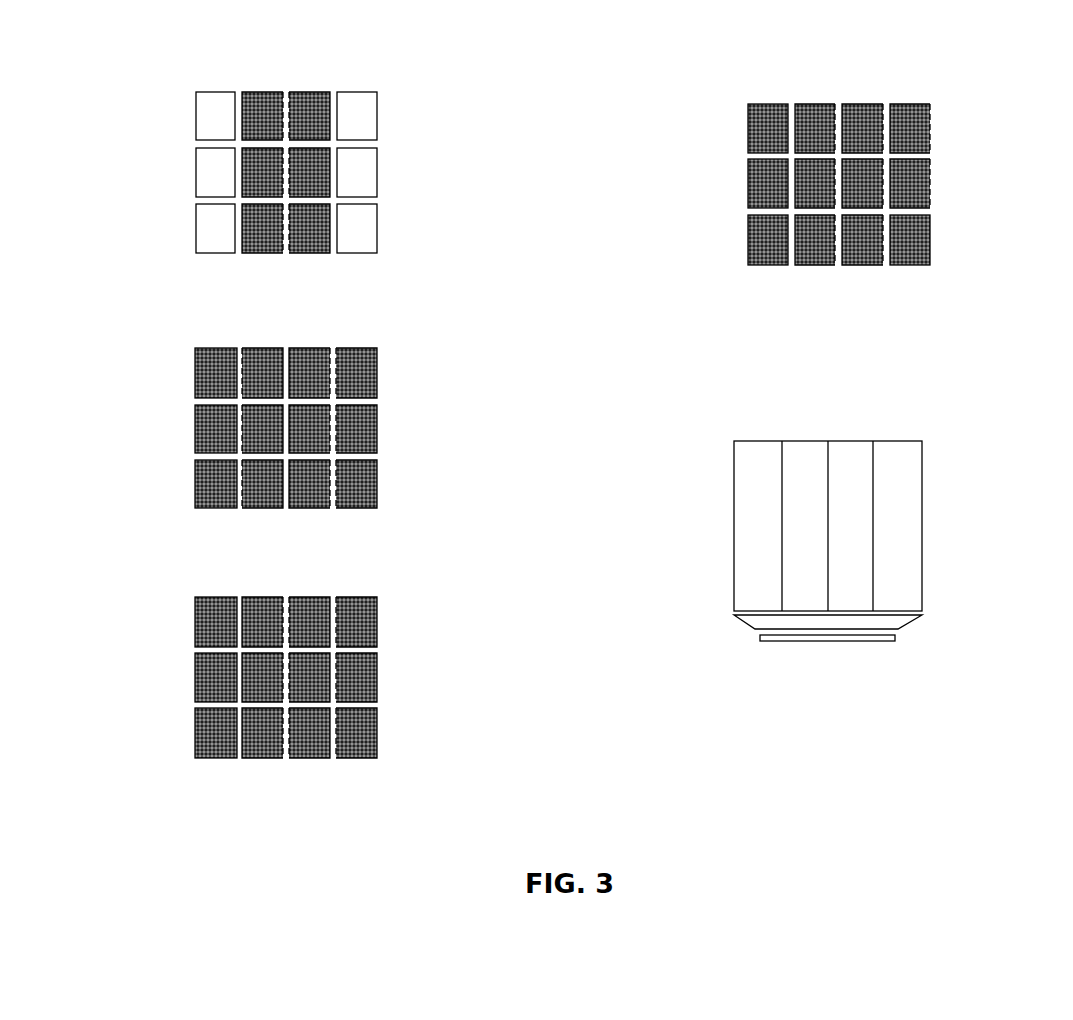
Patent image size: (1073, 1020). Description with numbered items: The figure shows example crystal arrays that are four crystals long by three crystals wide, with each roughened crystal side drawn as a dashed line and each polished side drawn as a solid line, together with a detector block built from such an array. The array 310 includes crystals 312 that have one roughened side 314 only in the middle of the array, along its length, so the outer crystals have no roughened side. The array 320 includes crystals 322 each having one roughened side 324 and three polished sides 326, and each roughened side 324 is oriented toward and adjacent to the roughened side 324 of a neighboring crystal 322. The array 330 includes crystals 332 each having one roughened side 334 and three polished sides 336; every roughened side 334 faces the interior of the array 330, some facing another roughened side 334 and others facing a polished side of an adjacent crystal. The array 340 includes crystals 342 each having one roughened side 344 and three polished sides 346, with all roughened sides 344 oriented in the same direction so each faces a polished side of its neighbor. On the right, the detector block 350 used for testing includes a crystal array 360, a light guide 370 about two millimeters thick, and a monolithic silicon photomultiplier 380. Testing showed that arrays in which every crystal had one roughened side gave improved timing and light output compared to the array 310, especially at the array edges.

The array 310 is at (187, 66).
The crystals 312 is at (263, 92).
The roughened side 314 is at (290, 115).
The array 320 is at (187, 322).
The crystals 322 is at (363, 348).
The roughened side 324 is at (330, 370).
The polished sides 326 is at (348, 348).
The array 330 is at (187, 575).
The crystals 332 is at (310, 597).
The roughened side 334 is at (337, 620).
The polished sides 336 is at (357, 597).
The array 340 is at (724, 70).
The crystals 342 is at (863, 104).
The roughened side 344 is at (931, 127).
The polished sides 346 is at (908, 104).
The detector block 350 is at (724, 404).
The crystal array 360 is at (927, 488).
The light guide 370 is at (927, 616).
The silicon photomultiplier (SiPM) 380 is at (903, 637).